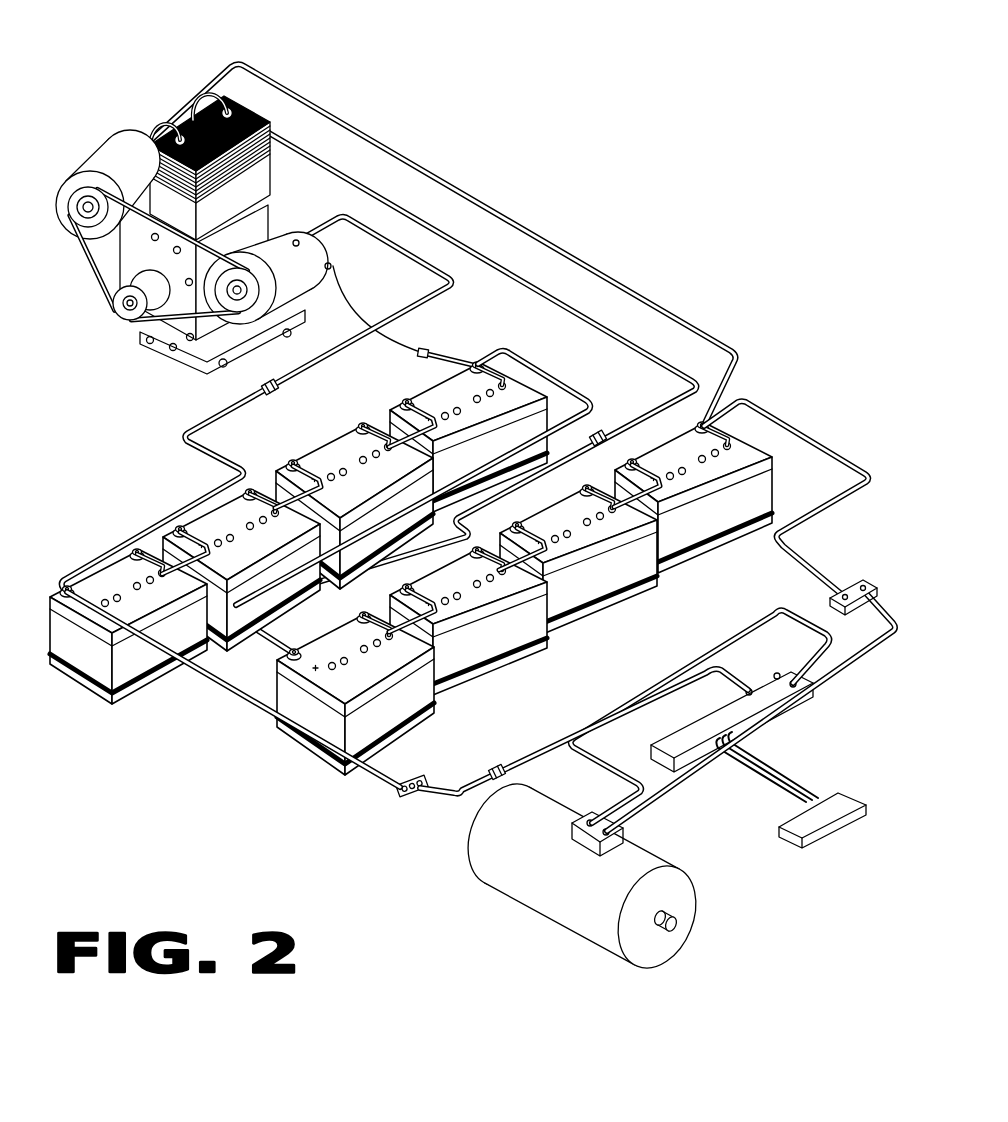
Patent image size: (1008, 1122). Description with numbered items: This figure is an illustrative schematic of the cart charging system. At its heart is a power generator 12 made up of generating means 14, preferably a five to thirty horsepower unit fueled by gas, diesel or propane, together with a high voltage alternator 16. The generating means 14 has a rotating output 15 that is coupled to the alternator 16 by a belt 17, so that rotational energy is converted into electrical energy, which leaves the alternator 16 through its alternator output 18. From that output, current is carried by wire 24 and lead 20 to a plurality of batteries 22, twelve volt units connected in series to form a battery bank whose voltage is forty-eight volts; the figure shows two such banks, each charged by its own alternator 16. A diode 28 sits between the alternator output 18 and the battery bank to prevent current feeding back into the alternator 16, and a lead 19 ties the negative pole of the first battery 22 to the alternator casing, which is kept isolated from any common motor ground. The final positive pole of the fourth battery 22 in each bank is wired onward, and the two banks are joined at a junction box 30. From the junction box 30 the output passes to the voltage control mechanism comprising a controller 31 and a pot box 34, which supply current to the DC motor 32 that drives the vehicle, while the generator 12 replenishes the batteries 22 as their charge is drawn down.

The power generator 12 is at (325, 64).
The generating means 14 is at (258, 183).
The output 15 is at (130, 320).
The alternator 16 is at (188, 301).
The belt 17 is at (103, 278).
The alternator output 18 is at (140, 150).
The lead 19 is at (415, 158).
The lead 20 is at (222, 462).
The battery 22 is at (525, 383).
The wire 24 is at (466, 690).
The diode 28 is at (278, 396).
The junction box 30 is at (398, 792).
The controller 31 is at (710, 767).
The DC motor 32 is at (680, 947).
The Pot box 34 is at (822, 790).